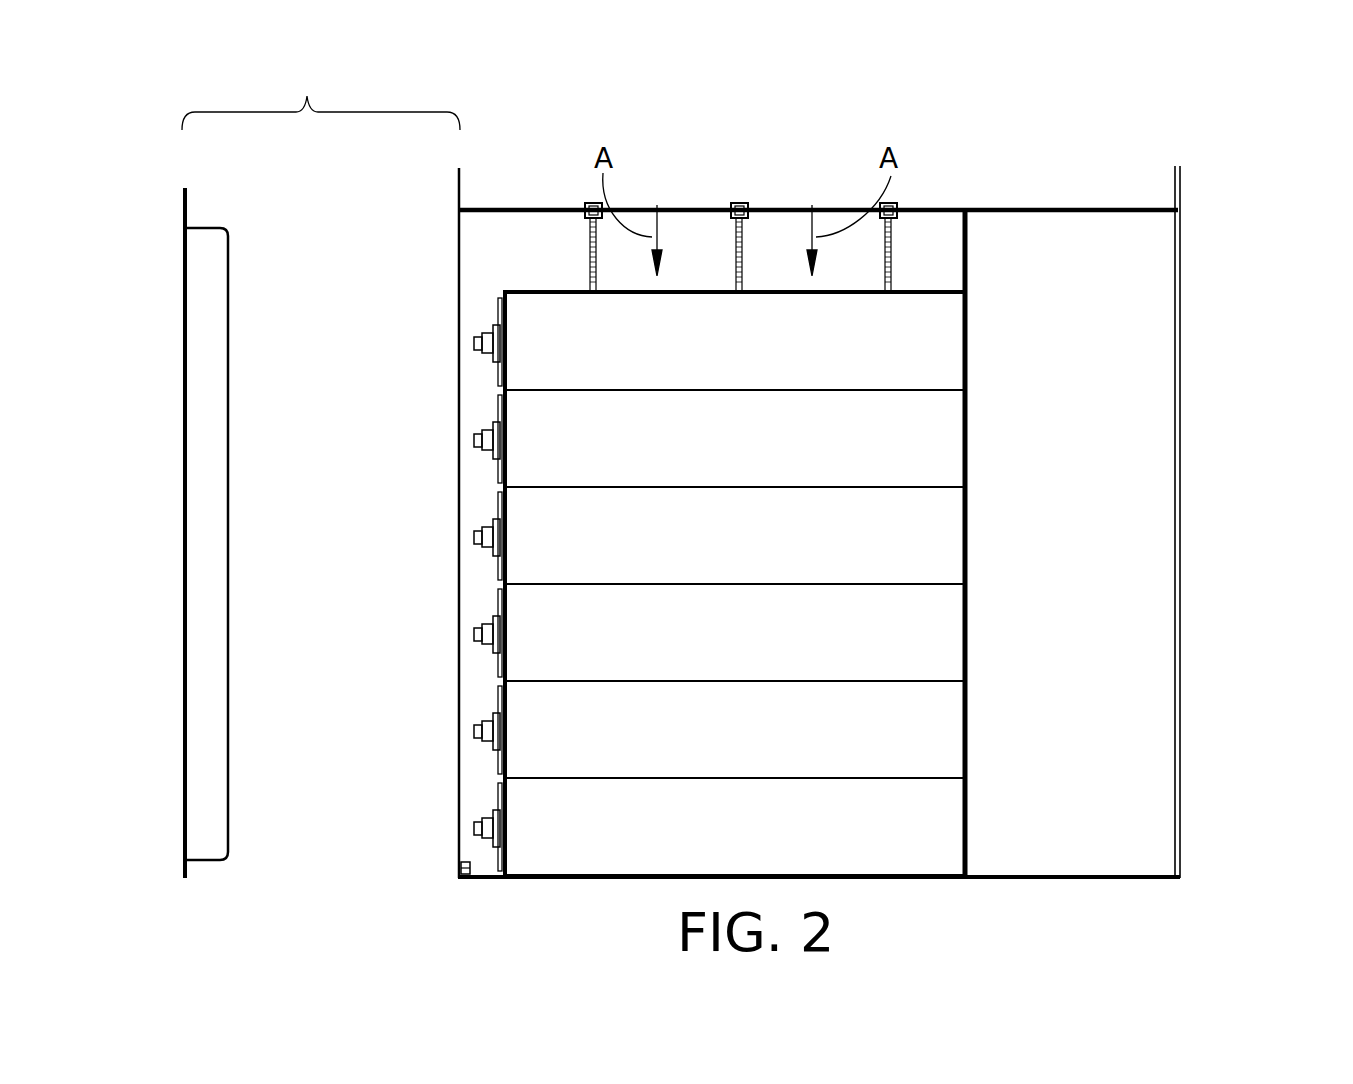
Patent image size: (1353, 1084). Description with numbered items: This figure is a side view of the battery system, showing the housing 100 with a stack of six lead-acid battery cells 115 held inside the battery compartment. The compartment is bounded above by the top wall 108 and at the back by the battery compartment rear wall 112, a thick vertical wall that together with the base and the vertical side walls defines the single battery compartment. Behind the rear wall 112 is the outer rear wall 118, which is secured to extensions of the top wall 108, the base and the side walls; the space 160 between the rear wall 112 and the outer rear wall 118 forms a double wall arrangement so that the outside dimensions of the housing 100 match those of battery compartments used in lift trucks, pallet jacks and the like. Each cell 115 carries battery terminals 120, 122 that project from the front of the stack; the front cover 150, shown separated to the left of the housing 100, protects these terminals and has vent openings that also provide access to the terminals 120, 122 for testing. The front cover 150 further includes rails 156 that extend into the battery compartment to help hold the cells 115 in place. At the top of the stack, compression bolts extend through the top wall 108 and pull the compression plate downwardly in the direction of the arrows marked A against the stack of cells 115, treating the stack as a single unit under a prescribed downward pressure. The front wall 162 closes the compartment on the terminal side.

The housing 100 is at (737, 190).
The top wall 108 is at (785, 208).
The rear wall 112 is at (968, 350).
The battery cells 115 is at (822, 360).
The outer rear wall 118 is at (1181, 387).
The battery terminal 120 is at (474, 345).
The battery terminal 122 is at (474, 442).
The front cover 150 is at (186, 178).
The rails 156 is at (212, 228).
The space 160 is at (1101, 533).
The housing side wall 162 is at (463, 208).